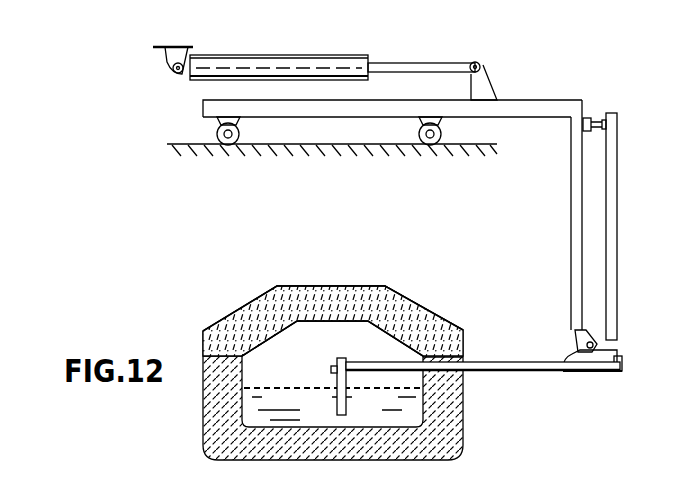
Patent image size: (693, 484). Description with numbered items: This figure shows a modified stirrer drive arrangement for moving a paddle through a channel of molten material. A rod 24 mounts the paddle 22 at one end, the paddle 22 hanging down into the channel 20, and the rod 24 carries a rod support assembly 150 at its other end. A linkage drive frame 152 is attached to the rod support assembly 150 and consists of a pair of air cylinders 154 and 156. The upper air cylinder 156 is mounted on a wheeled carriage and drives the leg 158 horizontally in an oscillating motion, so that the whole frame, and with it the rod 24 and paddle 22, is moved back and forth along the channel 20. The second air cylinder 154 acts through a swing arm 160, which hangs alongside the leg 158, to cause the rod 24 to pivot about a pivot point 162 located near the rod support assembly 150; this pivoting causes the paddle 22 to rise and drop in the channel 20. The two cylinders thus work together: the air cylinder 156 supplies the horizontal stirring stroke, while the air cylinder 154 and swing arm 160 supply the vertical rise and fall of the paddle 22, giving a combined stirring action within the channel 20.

The channel 20 is at (282, 400).
The paddle 22 is at (330, 375).
The rod 24 is at (518, 362).
The rod support assembly 150 is at (612, 357).
The linkage drive frame 152 is at (589, 225).
The air cylinder 154 is at (590, 118).
The air cylinder 156 is at (340, 48).
The leg 158 is at (571, 213).
The swing arm 160 is at (617, 247).
The pivot point 162 is at (595, 343).